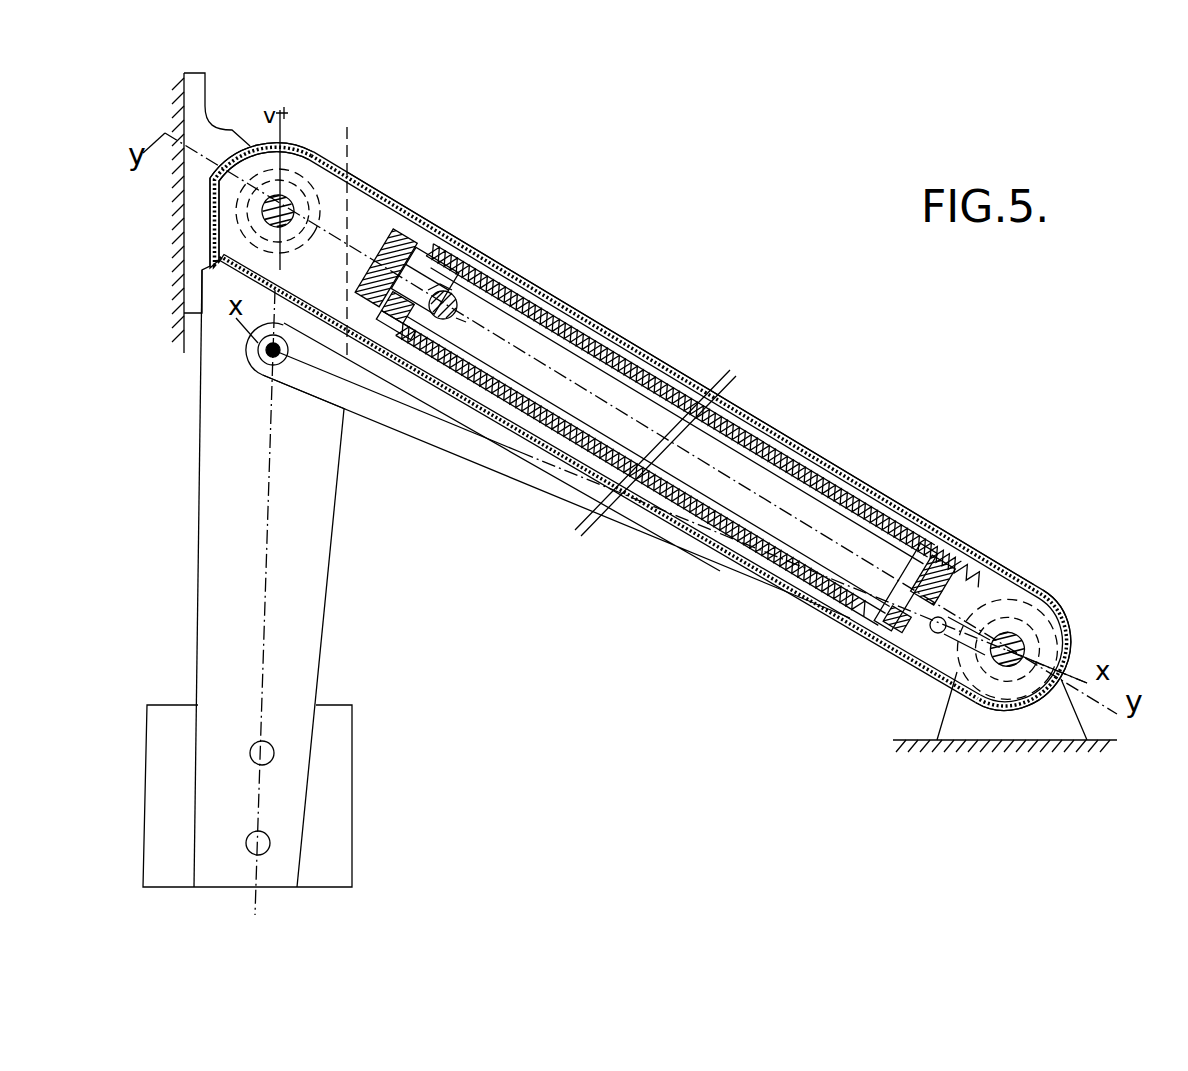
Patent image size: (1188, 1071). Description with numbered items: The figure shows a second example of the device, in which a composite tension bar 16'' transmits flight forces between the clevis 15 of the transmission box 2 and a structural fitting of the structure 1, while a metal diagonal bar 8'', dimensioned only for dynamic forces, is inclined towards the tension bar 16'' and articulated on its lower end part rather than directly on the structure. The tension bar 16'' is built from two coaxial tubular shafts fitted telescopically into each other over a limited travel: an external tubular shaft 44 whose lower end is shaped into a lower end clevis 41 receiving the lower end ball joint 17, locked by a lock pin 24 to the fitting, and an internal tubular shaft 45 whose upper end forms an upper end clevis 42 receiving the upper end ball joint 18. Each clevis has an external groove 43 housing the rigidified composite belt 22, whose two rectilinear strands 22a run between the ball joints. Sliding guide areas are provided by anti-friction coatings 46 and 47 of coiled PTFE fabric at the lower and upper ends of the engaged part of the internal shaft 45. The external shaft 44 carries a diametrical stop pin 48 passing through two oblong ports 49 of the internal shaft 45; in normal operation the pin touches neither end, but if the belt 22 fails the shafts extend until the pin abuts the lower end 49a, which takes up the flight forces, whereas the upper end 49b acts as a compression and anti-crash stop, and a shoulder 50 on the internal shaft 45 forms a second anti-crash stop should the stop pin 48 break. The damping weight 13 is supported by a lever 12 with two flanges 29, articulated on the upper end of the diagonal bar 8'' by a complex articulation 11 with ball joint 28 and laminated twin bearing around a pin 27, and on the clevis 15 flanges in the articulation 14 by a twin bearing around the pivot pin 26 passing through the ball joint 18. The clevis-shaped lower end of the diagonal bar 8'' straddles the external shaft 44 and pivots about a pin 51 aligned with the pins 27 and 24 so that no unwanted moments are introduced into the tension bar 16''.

The structure 1 is at (1100, 747).
The transmission box 2 is at (182, 347).
The diagonal bar 8'' is at (556, 470).
The complex articulation 11 is at (260, 383).
The lever 12 is at (195, 633).
The damping weight 13 is at (333, 760).
The articulation 14 is at (327, 199).
The clevis 15 is at (250, 143).
The composite tension bar 16'' is at (691, 378).
The lower end ball joint 17 is at (1020, 627).
The upper end ball joint 18 is at (351, 229).
The composite belt 22 is at (873, 492).
The strands of the belt 22a is at (517, 423).
The lock pin 24 is at (1006, 656).
The pivot pin 26 is at (263, 223).
The pin 27 is at (263, 370).
The ball joint 28 is at (260, 353).
The flanges 29 is at (300, 635).
The lower end clevis 41 is at (1050, 633).
The upper end clevis 42 is at (257, 170).
The external groove 43 is at (1047, 697).
The external tubular shaft 44 is at (920, 580).
The internal tubular shaft 45 is at (366, 230).
The anti-friction coating 46 is at (843, 597).
The anti-friction coating 47 is at (441, 307).
The stop pin 48 is at (457, 300).
The oblong ports 49 is at (465, 300).
The lower end of the ports 49a is at (466, 313).
The upper end of the ports 49b is at (442, 290).
The shoulder 50 is at (418, 300).
The pin 51 is at (944, 622).